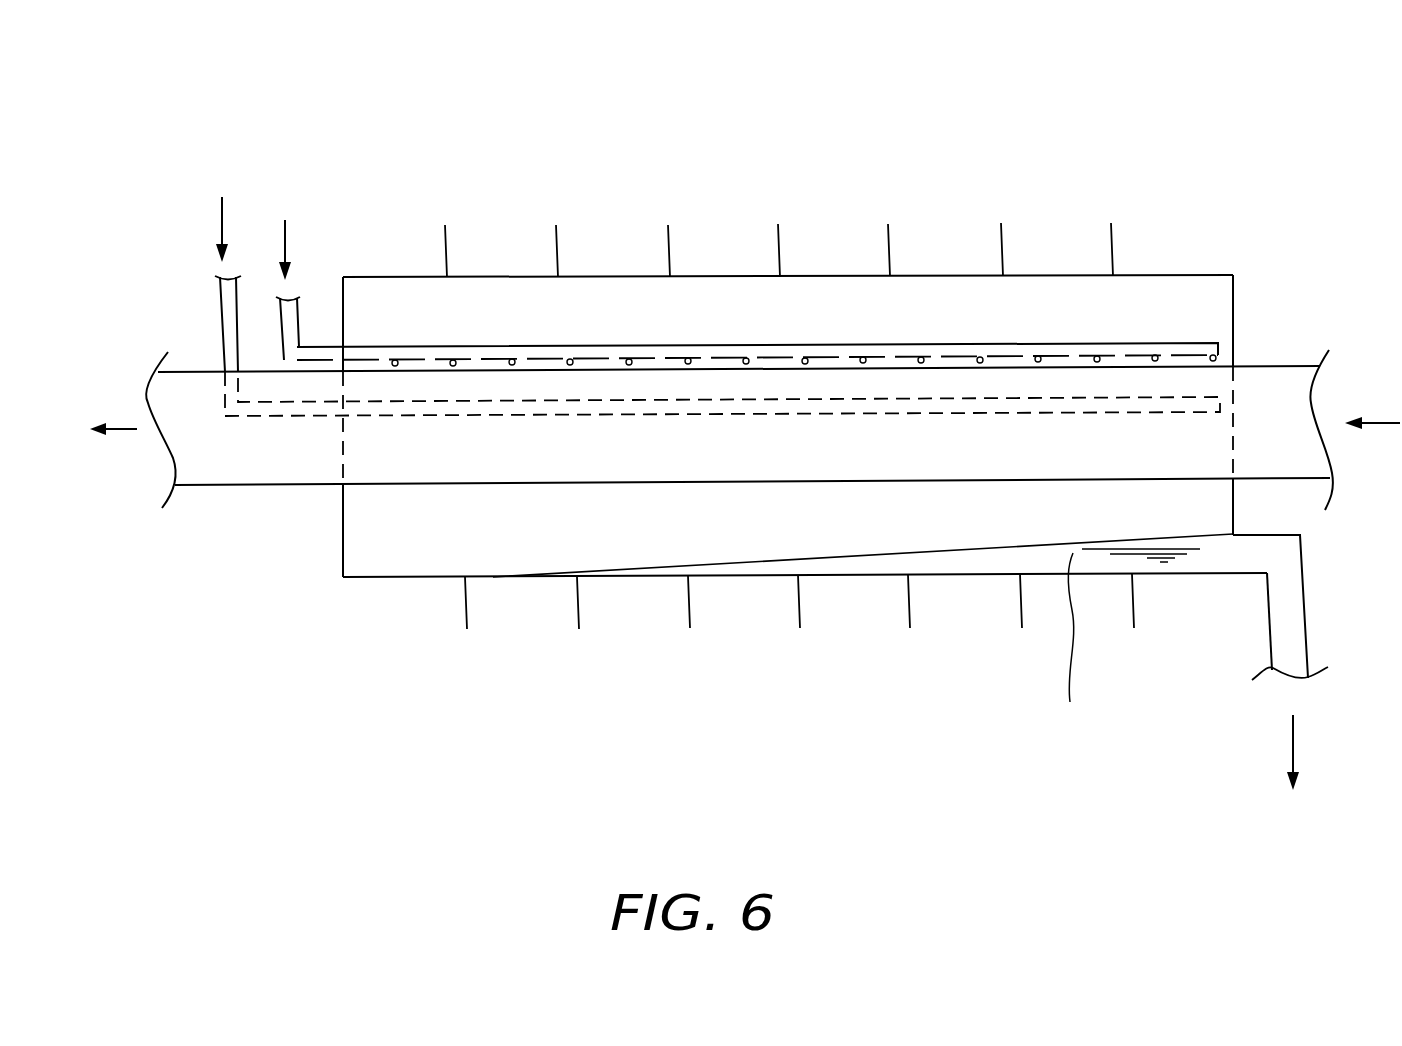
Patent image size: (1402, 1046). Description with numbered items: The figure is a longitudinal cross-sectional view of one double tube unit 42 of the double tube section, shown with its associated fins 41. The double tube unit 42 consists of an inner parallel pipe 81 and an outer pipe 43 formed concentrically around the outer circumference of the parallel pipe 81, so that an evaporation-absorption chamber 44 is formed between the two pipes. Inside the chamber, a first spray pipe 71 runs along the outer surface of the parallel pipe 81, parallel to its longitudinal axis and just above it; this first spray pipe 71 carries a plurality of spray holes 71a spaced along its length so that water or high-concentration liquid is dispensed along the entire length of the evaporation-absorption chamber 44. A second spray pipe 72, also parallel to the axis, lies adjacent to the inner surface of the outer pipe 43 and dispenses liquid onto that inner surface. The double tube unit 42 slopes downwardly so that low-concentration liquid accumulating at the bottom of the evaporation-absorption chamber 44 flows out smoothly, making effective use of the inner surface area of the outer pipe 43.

The double tube unit 42 is at (982, 130).
The evaporation-absorption chamber 44 is at (750, 300).
The parallel pipe 81 is at (1277, 363).
The first spray pipe 71 is at (620, 345).
The spray holes 71a is at (453, 360).
The second spray pipe 72 is at (562, 415).
The fins 41 is at (688, 603).
The outer pipe 43 is at (767, 577).